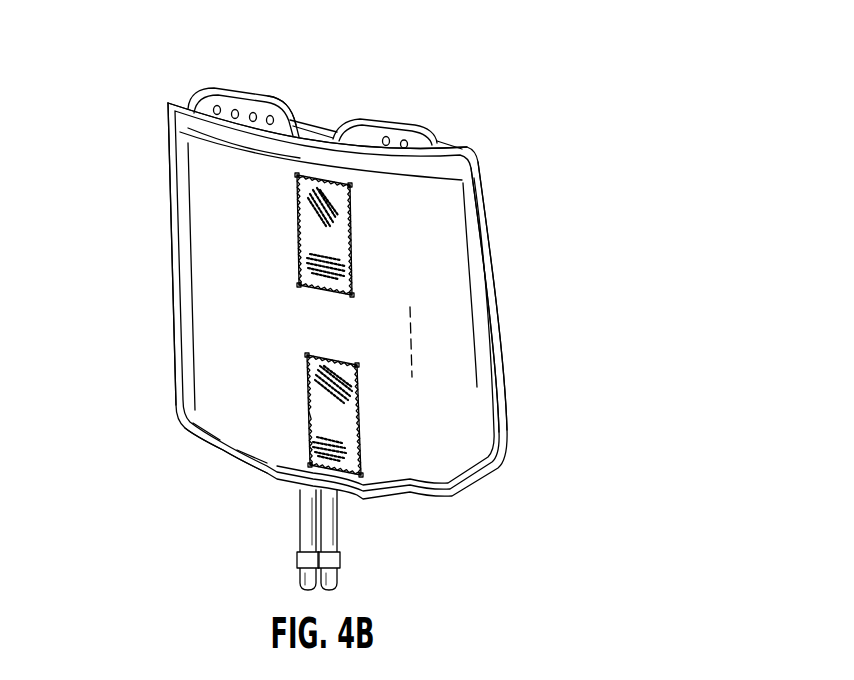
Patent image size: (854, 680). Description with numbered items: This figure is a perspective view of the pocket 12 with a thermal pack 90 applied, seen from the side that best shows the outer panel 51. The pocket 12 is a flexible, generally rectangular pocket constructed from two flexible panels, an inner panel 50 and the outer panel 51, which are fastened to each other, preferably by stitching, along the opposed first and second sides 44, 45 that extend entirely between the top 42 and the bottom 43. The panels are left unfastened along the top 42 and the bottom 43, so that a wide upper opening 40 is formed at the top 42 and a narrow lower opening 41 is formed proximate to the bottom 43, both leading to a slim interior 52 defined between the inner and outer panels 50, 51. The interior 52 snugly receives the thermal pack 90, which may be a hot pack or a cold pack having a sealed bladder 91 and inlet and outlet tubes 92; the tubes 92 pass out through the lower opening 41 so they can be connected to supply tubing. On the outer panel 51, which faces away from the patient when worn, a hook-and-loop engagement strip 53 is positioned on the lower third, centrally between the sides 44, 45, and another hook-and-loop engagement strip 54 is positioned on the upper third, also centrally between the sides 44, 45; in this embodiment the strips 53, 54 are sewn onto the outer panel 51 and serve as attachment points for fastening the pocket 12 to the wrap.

The pocket 12 is at (602, 157).
The upper opening 40 is at (325, 124).
The lower opening 41 is at (331, 540).
The top 42 is at (184, 104).
The bottom 43 is at (270, 475).
The first side 44 is at (507, 383).
The second side 45 is at (174, 343).
The inner panel 50 is at (450, 143).
The outer panel 51 is at (450, 238).
The interior 52 is at (392, 128).
The hook-and-loop engagement strip 53 is at (358, 428).
The hook-and-loop engagement strip 54 is at (345, 243).
The thermal pack 90 is at (220, 91).
The sealed bladder 91 is at (263, 98).
The inlet and outlet tubes 92 is at (303, 528).